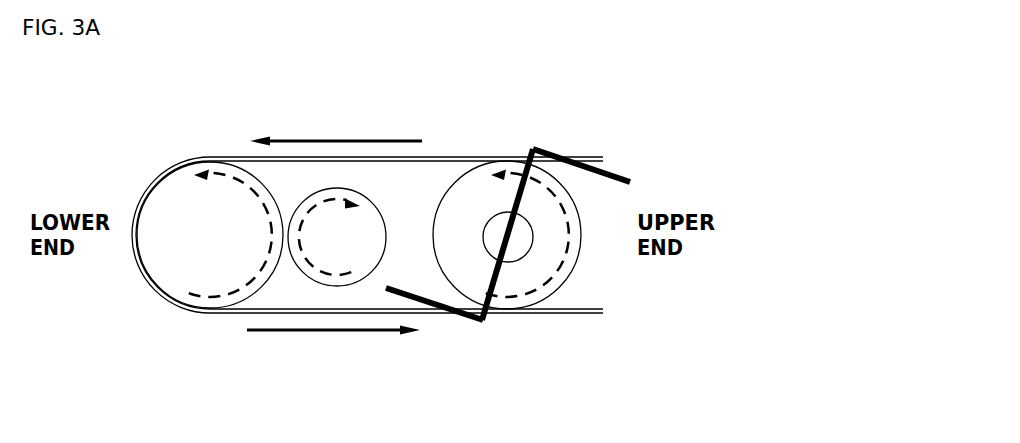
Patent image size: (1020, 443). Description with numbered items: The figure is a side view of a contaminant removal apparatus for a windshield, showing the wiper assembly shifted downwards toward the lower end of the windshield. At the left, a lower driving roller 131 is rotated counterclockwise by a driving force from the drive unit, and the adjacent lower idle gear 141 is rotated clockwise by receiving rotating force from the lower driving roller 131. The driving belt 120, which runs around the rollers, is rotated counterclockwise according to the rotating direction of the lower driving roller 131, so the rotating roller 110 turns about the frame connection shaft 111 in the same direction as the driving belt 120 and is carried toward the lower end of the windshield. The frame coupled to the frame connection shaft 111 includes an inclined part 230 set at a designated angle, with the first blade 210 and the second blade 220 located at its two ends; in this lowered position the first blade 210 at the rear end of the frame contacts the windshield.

The rotating roller 110 is at (553, 260).
The frame connection shaft 111 is at (490, 228).
The driving belt 120 is at (182, 160).
The lower driving roller 131 is at (180, 267).
The lower idle gear 141 is at (358, 222).
The first blade 210 is at (607, 170).
The second blade 220 is at (427, 305).
The inclined part 230 is at (502, 278).